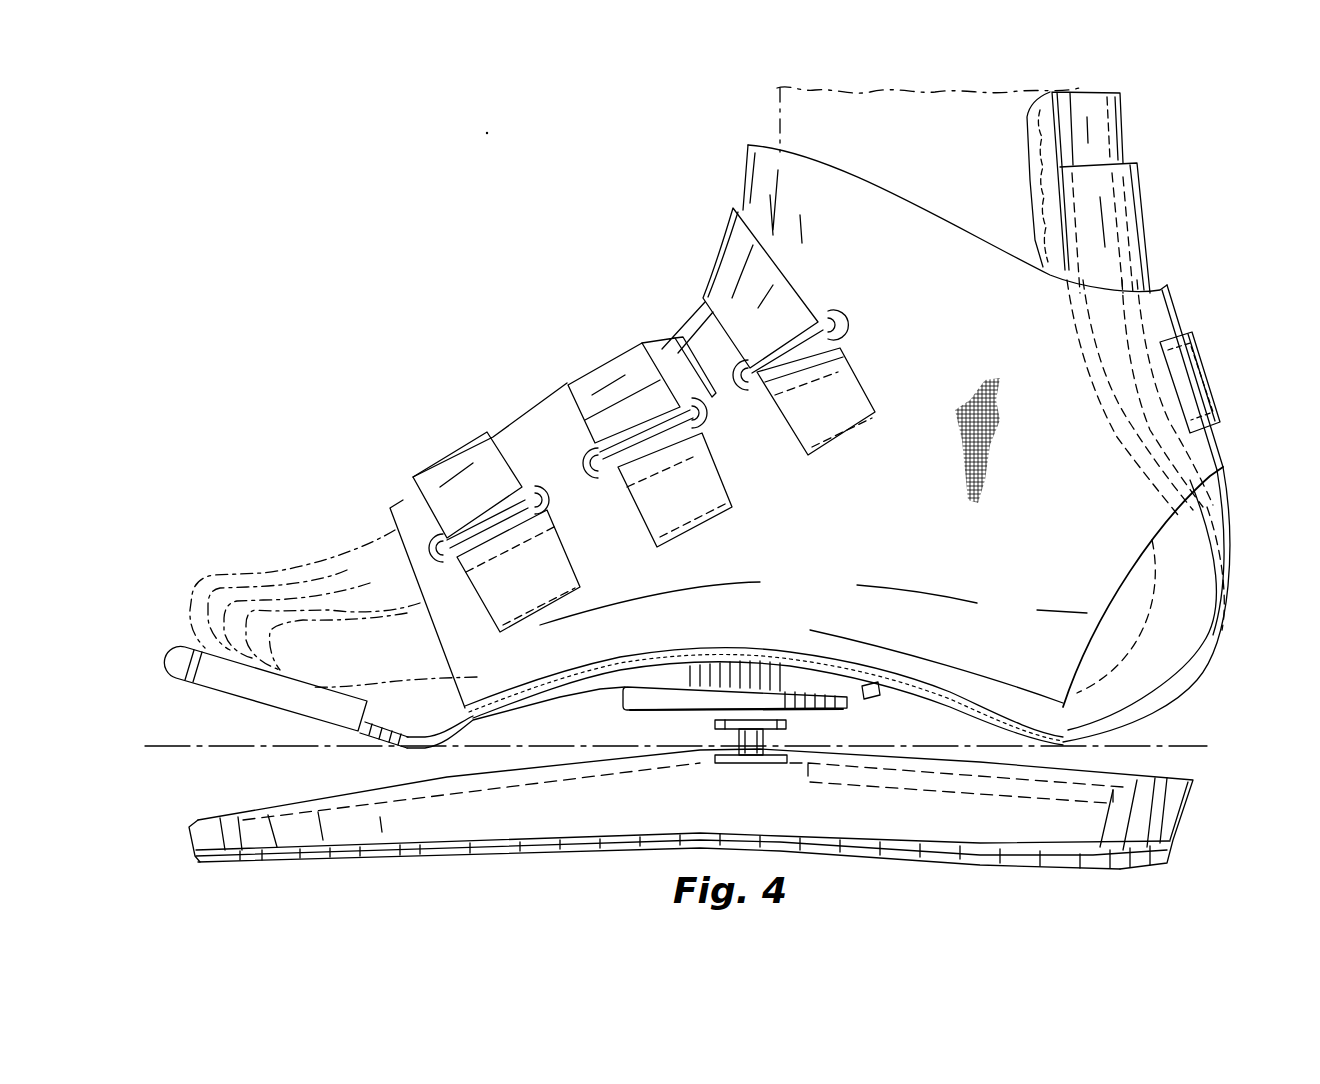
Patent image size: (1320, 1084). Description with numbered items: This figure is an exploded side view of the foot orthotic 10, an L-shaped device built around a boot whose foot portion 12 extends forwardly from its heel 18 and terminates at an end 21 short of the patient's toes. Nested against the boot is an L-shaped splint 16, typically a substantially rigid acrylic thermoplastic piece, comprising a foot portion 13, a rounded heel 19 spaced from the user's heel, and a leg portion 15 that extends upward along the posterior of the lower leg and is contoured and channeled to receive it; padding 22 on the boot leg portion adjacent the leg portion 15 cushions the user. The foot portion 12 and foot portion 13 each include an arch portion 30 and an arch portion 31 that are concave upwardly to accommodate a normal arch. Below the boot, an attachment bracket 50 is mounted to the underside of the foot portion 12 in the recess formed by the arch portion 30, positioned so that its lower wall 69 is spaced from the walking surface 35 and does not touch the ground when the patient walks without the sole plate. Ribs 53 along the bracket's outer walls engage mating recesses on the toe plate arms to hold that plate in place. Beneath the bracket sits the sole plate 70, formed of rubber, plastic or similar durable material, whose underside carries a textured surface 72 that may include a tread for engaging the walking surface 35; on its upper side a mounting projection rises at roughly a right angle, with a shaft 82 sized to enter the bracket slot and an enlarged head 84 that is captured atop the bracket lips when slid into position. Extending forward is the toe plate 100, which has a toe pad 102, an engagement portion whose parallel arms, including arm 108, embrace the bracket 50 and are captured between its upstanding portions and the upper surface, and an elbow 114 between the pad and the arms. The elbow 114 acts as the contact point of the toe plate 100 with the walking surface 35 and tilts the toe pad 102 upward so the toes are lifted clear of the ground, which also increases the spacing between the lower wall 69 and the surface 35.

The foot orthotic 10 is at (620, 250).
The foot portion 12 is at (533, 406).
The foot portion 13 is at (767, 648).
The leg portion 15 is at (1124, 152).
The splint 16 is at (1133, 119).
The heel 18 is at (1063, 707).
The heel 19 is at (1231, 583).
The end 21 is at (388, 510).
The padding 22 is at (1034, 147).
The arch portion 30 is at (688, 655).
The arch portion 31 is at (727, 647).
The walking surface 35 is at (293, 750).
The attachment bracket 50 is at (640, 718).
The ribs 53 is at (710, 680).
The lower wall 69 is at (632, 712).
The sole plate 70 is at (1208, 776).
The textured surface 72 is at (527, 853).
The shaft 82 is at (765, 737).
The enlarged head 84 is at (713, 724).
The toe plate 100 is at (163, 676).
The toe pad 102 is at (182, 650).
The arm 108 is at (857, 697).
The elbow 114 is at (410, 750).